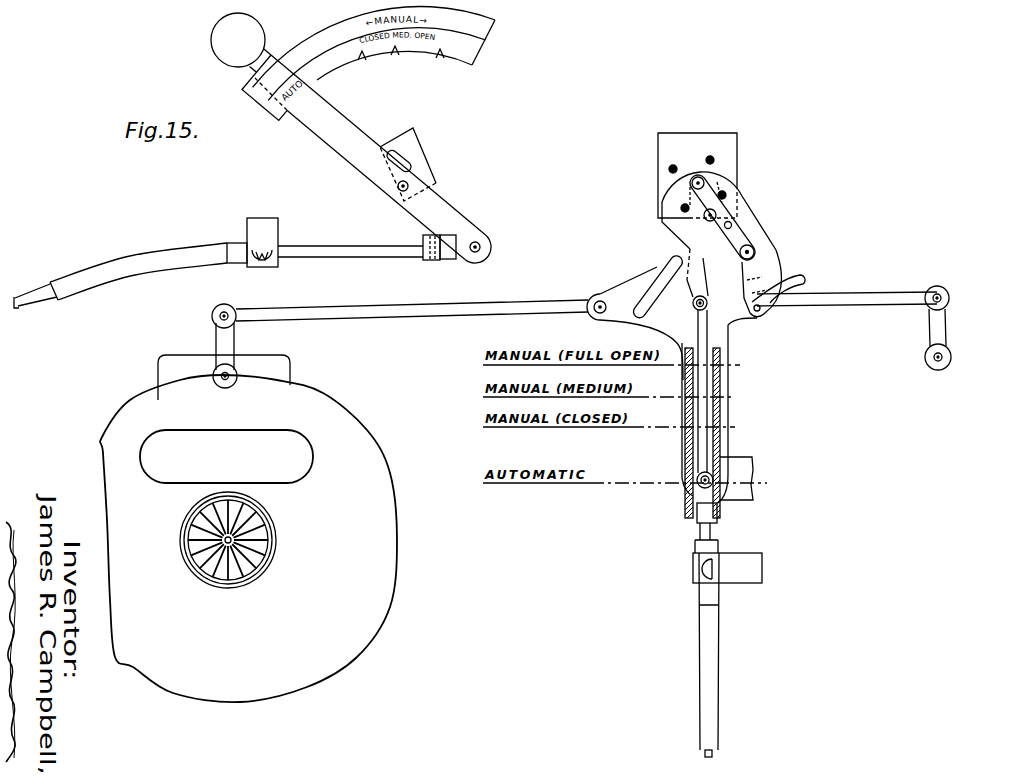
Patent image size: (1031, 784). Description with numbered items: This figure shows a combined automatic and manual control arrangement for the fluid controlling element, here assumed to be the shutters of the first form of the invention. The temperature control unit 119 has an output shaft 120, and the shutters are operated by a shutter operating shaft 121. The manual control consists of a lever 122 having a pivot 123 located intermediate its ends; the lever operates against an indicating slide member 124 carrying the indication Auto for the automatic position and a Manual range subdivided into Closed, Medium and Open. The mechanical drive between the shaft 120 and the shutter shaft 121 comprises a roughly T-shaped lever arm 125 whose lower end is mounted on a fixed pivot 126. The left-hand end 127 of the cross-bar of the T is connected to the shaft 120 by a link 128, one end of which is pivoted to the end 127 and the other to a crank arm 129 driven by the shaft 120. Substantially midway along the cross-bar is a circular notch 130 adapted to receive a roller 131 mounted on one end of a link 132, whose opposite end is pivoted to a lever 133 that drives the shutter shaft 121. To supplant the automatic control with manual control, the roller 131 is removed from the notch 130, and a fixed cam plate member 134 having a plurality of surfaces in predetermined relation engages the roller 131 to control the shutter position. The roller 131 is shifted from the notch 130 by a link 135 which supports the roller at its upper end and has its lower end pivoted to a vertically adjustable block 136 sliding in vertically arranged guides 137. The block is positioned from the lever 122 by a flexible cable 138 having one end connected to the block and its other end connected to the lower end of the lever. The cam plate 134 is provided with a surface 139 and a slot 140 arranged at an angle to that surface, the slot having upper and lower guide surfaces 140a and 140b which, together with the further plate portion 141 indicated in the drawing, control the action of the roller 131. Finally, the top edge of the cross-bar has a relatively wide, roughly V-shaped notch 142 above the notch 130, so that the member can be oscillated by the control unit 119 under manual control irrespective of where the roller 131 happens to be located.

The temperature control unit 119 is at (333, 660).
The output shaft 120 is at (238, 374).
The shutter operating shaft 121 is at (948, 356).
The lever 122 is at (326, 128).
The pivot 123 is at (397, 188).
The indicating slide member 124 is at (272, 115).
The lever arm 125 is at (733, 327).
The fixed pivot 126 is at (743, 500).
The left-hand end of the cross-bar 127 is at (623, 285).
The link 128 is at (430, 311).
The crank arm 129 is at (217, 335).
The circular notch 130 is at (697, 307).
The roller 131 is at (702, 297).
The link 132 is at (891, 305).
The lever 133 is at (945, 323).
The fixed cam plate member 134 is at (778, 248).
The link 135 is at (727, 325).
The vertically adjustable block 136 is at (698, 493).
The guides 137 is at (695, 447).
The flexible cable 138 is at (373, 250).
The surface 139 is at (672, 290).
The slot 140 is at (745, 238).
The upper guide surface 140a is at (745, 235).
The lower guide surface 140b is at (750, 228).
The finger 141 is at (755, 273).
The V-shaped notch 142 is at (690, 277).